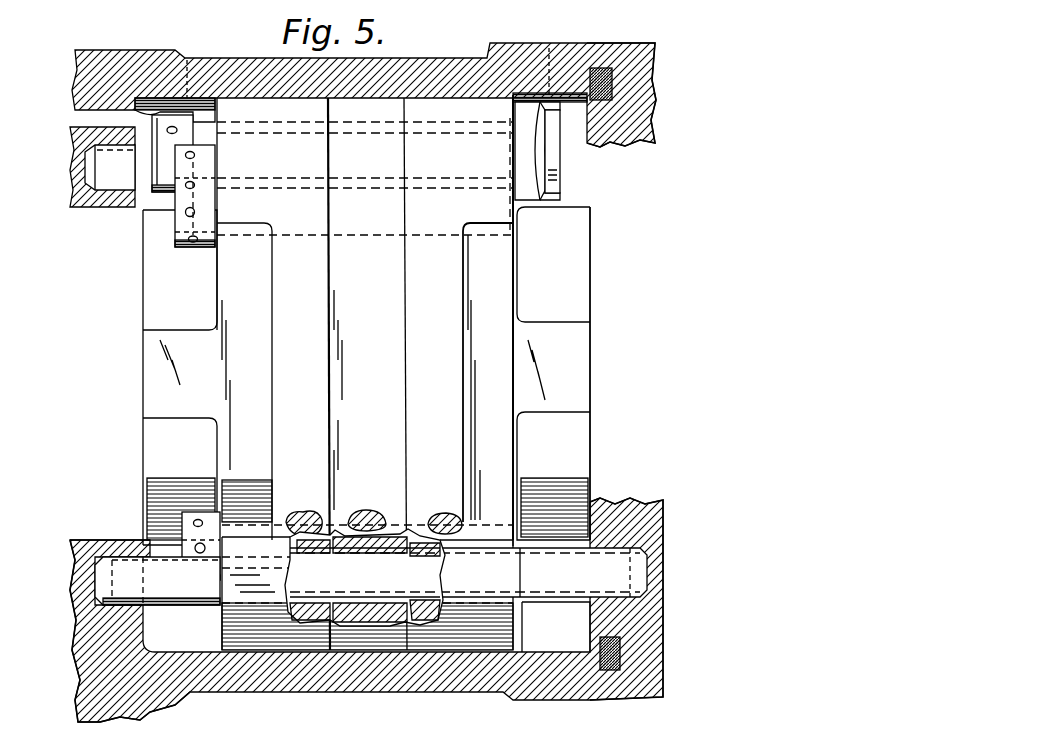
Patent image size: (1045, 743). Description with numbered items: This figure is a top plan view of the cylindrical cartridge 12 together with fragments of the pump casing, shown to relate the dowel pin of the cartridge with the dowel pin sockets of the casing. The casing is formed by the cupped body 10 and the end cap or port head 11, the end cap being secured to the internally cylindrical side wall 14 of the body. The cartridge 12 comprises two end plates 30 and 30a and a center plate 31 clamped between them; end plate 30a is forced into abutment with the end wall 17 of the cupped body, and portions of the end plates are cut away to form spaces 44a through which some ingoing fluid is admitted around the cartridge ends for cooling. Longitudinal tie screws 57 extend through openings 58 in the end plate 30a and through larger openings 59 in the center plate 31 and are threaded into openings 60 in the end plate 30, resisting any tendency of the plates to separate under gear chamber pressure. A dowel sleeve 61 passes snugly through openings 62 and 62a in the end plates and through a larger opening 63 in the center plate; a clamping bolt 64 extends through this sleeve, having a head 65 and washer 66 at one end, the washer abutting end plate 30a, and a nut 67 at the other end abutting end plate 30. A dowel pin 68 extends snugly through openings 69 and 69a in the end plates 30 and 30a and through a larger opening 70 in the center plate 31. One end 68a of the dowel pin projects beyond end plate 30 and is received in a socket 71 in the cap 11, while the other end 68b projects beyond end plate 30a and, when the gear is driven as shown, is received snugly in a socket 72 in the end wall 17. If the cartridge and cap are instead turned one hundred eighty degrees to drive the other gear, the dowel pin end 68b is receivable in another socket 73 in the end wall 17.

The cupped body 10 is at (100, 50).
The end cap or port head 11 is at (648, 91).
The cylindrical cartridge 12 is at (140, 392).
The side wall 14 is at (250, 64).
The end wall 17 is at (71, 142).
The end plate 30 is at (553, 274).
The end plate 30a is at (203, 317).
The center plate 31 is at (394, 348).
The spaces 44a is at (561, 704).
The longitudinal tie screws 57 is at (207, 196).
The openings 58 is at (302, 512).
The larger openings 59 is at (364, 510).
The openings 60 is at (441, 513).
The dowel sleeve 61 is at (475, 181).
The opening 62 is at (483, 120).
The opening 62a is at (306, 123).
The larger opening 63 is at (380, 120).
The clamping bolt 64 is at (392, 160).
The head 65 is at (163, 192).
The washer 66 is at (204, 118).
The nut 67 is at (550, 150).
The dowel pin 68 is at (440, 570).
The end of dowel pin 68a is at (576, 580).
The end of dowel pin 68b is at (170, 590).
The opening 69 is at (424, 547).
The opening 69a is at (322, 542).
The larger opening 70 is at (383, 543).
The socket 71 is at (628, 548).
The socket 72 is at (90, 583).
The socket 73 is at (102, 170).